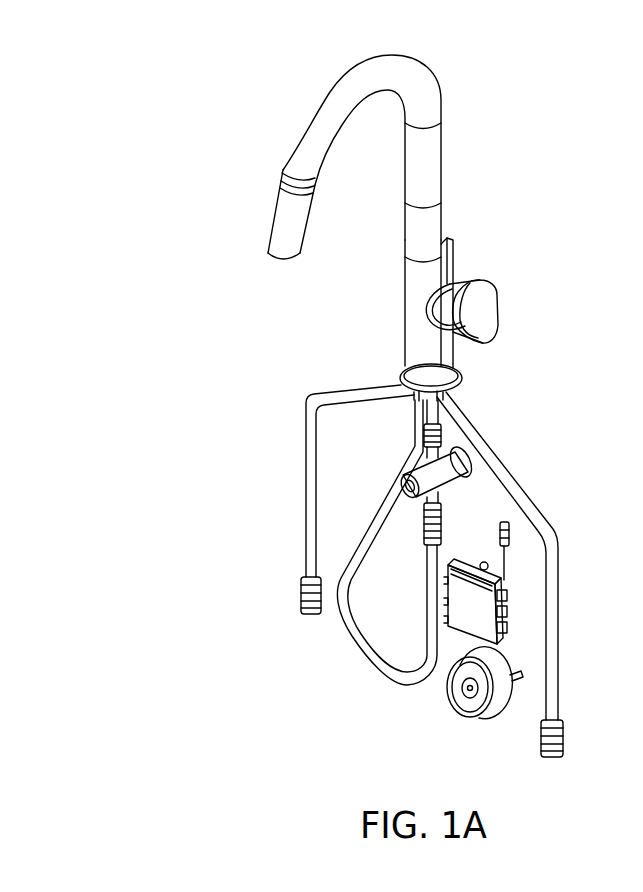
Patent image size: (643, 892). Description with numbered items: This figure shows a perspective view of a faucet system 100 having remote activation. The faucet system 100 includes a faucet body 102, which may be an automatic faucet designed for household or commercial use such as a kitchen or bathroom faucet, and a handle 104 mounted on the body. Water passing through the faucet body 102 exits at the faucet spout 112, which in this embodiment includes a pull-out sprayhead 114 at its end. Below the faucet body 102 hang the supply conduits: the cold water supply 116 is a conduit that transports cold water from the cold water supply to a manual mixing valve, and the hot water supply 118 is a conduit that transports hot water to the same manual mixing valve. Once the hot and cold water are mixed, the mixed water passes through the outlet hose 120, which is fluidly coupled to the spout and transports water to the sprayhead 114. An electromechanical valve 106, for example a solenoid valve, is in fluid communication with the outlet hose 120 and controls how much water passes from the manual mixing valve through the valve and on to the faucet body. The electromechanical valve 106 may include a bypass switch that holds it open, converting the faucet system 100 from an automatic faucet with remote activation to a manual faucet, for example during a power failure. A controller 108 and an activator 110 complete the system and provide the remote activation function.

The faucet system 100 is at (118, 100).
The faucet body 102 is at (428, 244).
The handle 104 is at (488, 317).
The electromechanical valve 106 is at (443, 497).
The controller 108 is at (487, 611).
The activator 110 is at (495, 707).
The faucet spout 112 is at (333, 105).
The sprayhead 114 is at (273, 230).
The cold water supply 116 is at (548, 542).
The hot water supply 118 is at (307, 465).
The outlet hose 120 is at (387, 674).